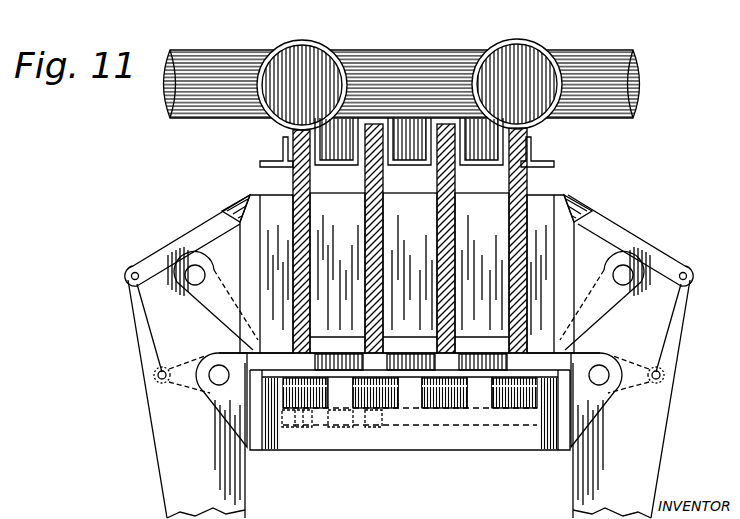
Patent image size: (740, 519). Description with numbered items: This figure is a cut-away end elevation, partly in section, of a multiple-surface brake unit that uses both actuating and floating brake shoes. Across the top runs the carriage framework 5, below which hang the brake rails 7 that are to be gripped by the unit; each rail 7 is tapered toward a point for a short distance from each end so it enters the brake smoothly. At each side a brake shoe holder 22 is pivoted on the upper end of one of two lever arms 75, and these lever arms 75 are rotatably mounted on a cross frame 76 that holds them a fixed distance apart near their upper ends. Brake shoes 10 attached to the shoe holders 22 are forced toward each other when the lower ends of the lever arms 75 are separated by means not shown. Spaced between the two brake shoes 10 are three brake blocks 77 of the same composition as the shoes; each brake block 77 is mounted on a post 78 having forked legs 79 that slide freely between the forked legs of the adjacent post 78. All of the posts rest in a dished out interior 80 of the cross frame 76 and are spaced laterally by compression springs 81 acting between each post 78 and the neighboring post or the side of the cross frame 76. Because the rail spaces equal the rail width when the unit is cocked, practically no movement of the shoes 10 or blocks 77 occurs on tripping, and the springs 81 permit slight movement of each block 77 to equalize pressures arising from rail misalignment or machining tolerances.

The carriage framework 5 is at (603, 68).
The brake rail 7 is at (296, 171).
The brake shoe 10 is at (278, 205).
The brake shoe holder 22 is at (228, 212).
The lever arm 75 is at (172, 322).
The brake block 77 is at (357, 221).
The post 78 is at (343, 412).
The forked legs 79 is at (306, 428).
The dished out interior 80 is at (289, 428).
The cross frame 76 is at (324, 430).
The compression spring 81 is at (376, 410).